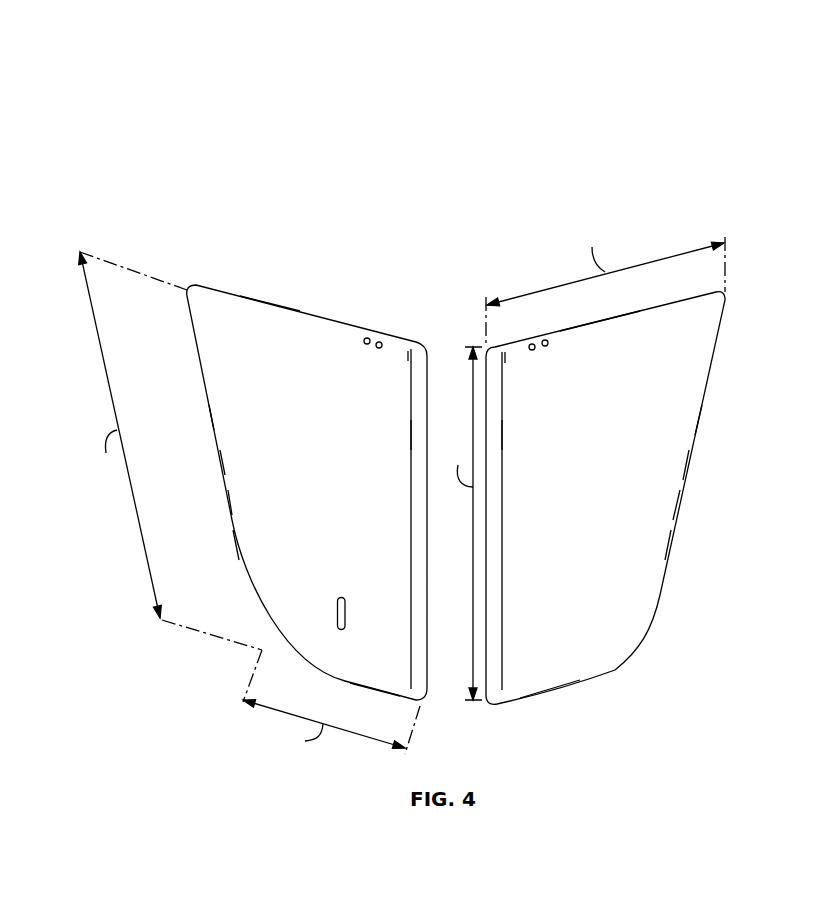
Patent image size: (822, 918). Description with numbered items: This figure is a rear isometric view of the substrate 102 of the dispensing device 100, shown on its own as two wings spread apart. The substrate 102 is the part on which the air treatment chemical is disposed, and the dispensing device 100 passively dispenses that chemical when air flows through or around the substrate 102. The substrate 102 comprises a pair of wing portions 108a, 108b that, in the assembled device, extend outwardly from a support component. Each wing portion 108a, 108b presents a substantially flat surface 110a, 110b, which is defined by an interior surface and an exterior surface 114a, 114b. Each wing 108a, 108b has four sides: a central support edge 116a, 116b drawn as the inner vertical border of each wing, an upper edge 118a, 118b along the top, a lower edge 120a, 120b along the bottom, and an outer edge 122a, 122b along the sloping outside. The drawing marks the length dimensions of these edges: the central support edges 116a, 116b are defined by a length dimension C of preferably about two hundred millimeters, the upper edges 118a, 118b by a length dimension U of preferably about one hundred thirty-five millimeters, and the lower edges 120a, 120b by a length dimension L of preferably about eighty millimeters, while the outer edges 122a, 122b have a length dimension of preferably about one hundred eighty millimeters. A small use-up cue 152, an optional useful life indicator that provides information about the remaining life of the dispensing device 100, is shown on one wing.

The dispensing device 100 is at (806, 70).
The substrate 102 is at (708, 360).
The wing portion 108a is at (218, 419).
The wing portion 108b is at (677, 465).
The substantially flat surface 110a is at (235, 462).
The substantially flat surface 110b is at (670, 503).
The exterior surface 114a is at (238, 500).
The exterior surface 114b is at (663, 540).
The central support edge 116a is at (427, 433).
The central support edge 116b is at (487, 433).
The upper edge 118a is at (241, 299).
The upper edge 118b is at (613, 317).
The lower edge 120a is at (372, 687).
The lower edge 120b is at (545, 692).
The outer edge 122a is at (240, 542).
The outer edge 122b is at (698, 421).
The use-up cue 152 is at (337, 613).